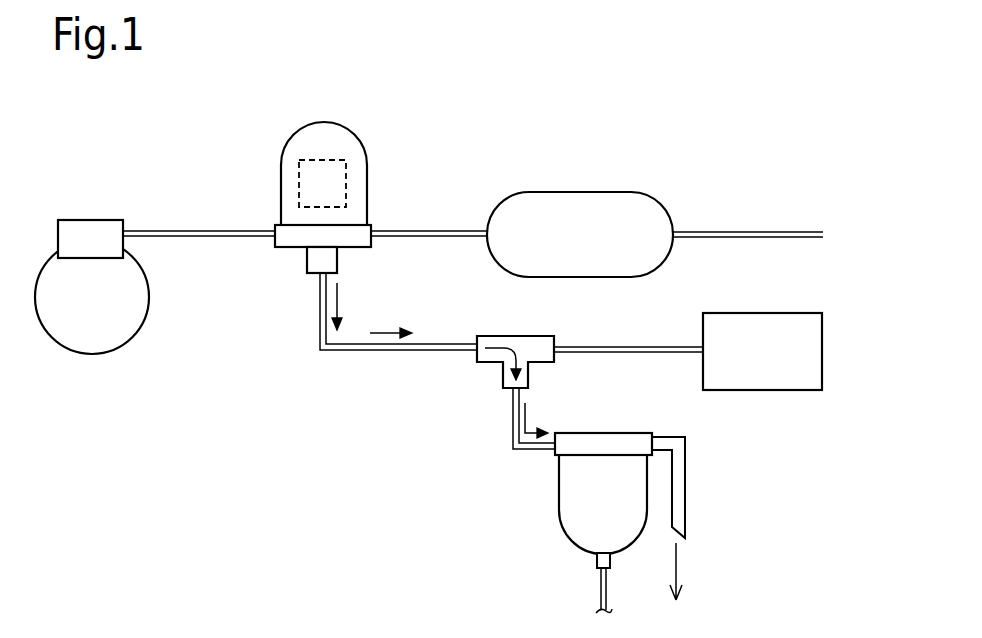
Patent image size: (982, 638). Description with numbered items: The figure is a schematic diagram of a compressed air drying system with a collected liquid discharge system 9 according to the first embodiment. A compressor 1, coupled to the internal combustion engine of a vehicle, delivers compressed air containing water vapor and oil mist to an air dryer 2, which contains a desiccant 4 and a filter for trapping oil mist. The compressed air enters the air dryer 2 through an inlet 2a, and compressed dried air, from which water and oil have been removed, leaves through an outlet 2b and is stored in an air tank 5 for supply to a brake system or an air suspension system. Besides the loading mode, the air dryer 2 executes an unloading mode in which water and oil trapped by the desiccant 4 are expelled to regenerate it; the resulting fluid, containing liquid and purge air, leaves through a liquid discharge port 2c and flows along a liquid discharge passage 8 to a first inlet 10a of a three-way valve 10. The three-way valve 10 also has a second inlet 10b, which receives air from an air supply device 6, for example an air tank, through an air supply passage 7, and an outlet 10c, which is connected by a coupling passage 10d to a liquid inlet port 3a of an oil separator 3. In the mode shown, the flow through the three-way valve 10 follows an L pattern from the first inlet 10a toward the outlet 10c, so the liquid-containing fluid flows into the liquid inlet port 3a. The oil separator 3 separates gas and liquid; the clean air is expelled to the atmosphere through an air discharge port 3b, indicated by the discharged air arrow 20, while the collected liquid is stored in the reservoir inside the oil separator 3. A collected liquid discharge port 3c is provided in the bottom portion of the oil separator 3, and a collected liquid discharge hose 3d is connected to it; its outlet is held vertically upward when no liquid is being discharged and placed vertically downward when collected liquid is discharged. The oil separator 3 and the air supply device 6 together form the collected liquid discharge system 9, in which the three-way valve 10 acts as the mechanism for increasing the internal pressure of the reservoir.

The compressor 1 is at (95, 220).
The air dryer 2 is at (322, 184).
The inlet 2a is at (272, 226).
The outlet 2b is at (375, 228).
The liquid discharge port 2c is at (318, 280).
The oil separator 3 is at (603, 495).
The liquid inlet port 3a is at (547, 453).
The air discharge port 3b is at (660, 433).
The collected liquid discharge port 3c is at (596, 558).
The collected liquid discharge hose 3d is at (601, 594).
The desiccant 4 is at (348, 170).
The air tank 5 is at (578, 192).
The air supply device 6 is at (778, 313).
The air supply passage 7 is at (619, 347).
The liquid discharge passage 8 is at (364, 351).
The collected liquid discharge system 9 is at (461, 514).
The three-way valve 10 is at (508, 346).
The first inlet 10a is at (473, 336).
The second inlet 10b is at (558, 338).
The outlet 10c is at (510, 390).
The coupling passage 10d is at (512, 440).
The discharged air 20 is at (688, 472).